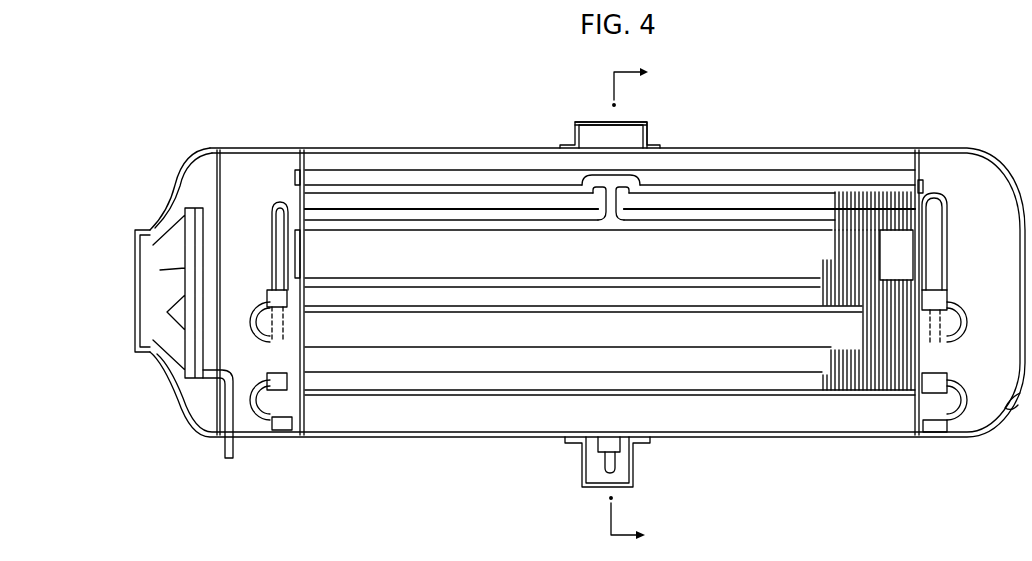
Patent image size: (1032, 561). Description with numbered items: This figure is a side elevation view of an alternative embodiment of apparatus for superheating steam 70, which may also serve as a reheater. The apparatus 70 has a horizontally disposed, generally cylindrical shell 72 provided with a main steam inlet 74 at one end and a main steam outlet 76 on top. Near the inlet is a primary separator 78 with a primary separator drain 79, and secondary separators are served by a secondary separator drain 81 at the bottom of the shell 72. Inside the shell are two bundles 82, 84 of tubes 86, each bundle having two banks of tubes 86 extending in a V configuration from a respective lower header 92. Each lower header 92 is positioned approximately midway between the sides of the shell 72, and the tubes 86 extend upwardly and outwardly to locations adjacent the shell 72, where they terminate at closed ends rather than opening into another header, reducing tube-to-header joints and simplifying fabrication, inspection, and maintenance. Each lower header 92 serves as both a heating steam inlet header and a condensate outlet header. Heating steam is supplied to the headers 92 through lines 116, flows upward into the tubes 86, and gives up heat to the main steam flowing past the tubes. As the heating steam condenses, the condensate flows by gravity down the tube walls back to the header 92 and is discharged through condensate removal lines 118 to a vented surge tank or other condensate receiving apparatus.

The apparatus for superheating steam 70 is at (746, 103).
The shell 72 is at (383, 148).
The main steam inlet 74 is at (153, 230).
The main steam outlet 76 is at (650, 128).
The primary separator 78 is at (190, 297).
The primary separator drain 79 is at (232, 445).
The secondary separator drain 81 is at (600, 445).
The bundle of tubes 82 is at (838, 200).
The bundle of tubes 84 is at (823, 383).
The tubes 86 is at (890, 205).
The lower header 92 is at (572, 335).
The lines 116 is at (292, 212).
The condensate removal lines 118 is at (612, 460).